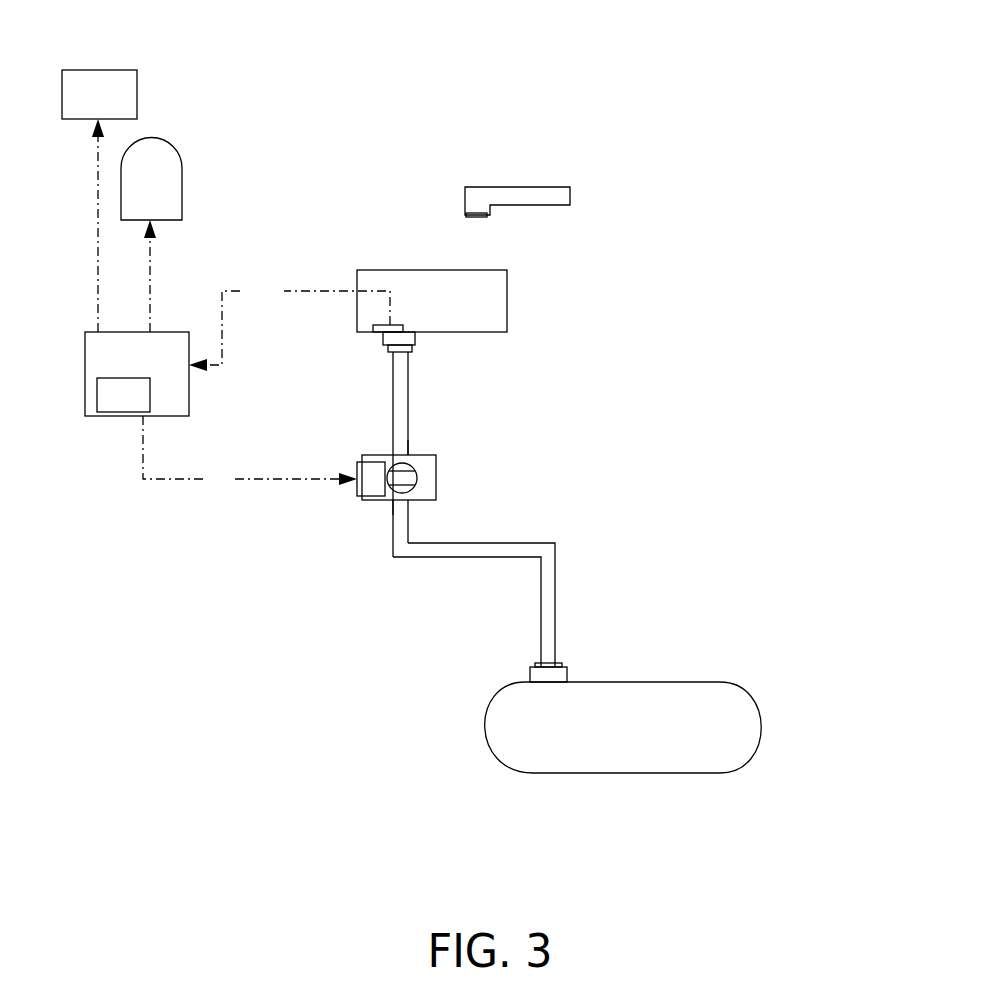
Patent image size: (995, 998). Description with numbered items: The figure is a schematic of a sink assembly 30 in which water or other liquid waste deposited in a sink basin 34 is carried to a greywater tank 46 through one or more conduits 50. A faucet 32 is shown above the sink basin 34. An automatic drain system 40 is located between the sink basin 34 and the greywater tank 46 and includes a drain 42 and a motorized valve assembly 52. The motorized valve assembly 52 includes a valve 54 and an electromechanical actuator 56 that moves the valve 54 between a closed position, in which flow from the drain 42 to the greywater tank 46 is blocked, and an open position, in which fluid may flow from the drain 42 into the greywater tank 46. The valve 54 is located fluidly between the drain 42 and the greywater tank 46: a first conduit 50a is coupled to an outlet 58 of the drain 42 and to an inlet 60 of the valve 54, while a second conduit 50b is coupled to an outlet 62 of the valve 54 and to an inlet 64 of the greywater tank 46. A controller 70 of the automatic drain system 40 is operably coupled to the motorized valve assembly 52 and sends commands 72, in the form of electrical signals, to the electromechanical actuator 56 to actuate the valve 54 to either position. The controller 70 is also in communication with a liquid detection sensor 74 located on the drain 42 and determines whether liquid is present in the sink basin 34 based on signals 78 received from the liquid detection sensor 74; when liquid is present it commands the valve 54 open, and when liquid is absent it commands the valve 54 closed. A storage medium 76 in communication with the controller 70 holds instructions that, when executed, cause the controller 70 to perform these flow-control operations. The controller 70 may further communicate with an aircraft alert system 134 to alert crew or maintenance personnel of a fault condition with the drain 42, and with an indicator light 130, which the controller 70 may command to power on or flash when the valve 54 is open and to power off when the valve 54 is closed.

The sink assembly 30 is at (582, 112).
The faucet 32 is at (516, 192).
The sink basin 34 is at (468, 277).
The automatic drain system 40 is at (316, 250).
The drain 42 is at (405, 340).
The greywater tank 46 is at (505, 726).
The conduits 50 is at (482, 509).
The first conduit 50a is at (408, 375).
The second conduit 50b is at (480, 543).
The motorized valve assembly 52 is at (357, 464).
The valve 54 is at (392, 466).
The electromechanical actuator 56 is at (370, 478).
The outlet 58 is at (410, 348).
The inlet 60 is at (405, 455).
The outlet 62 is at (400, 500).
The inlet 64 is at (560, 675).
The controller 70 is at (126, 365).
The commands 72 is at (250, 454).
The liquid detection sensor 74 is at (398, 325).
The storage medium 76 is at (112, 406).
The signals 78 is at (289, 325).
The indicator light 130 is at (136, 195).
The aircraft alert system 134 is at (84, 107).